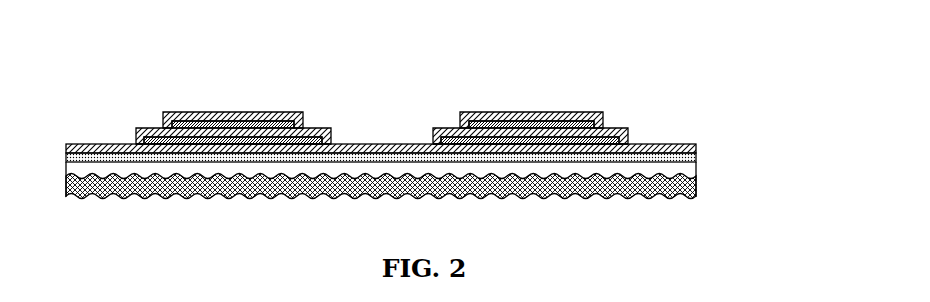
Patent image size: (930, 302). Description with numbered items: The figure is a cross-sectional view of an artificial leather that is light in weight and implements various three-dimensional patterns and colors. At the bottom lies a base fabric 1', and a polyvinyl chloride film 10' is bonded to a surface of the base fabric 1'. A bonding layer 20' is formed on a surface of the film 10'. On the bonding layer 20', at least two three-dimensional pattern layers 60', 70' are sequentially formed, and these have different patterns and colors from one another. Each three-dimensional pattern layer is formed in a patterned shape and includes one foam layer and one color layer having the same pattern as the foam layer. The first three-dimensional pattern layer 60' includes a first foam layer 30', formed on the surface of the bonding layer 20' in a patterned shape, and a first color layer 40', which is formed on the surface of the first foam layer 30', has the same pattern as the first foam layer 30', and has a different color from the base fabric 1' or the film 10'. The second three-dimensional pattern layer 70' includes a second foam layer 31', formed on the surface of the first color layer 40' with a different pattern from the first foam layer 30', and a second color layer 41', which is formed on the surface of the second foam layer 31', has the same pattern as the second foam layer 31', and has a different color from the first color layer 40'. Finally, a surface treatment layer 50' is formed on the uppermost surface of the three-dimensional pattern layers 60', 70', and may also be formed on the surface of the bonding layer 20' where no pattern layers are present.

The base fabric 1' is at (417, 199).
The polyvinyl chloride film 10' is at (424, 175).
The bonding layer 20' is at (424, 138).
The first foam layer 30' is at (418, 122).
The second foam layer 31' is at (381, 97).
The first color layer 40' is at (399, 106).
The second color layer 41' is at (383, 89).
The surface treatment layer 50' is at (383, 89).
The first three-dimensional pattern layer 60' is at (686, 69).
The second three-dimensional pattern layer 70' is at (545, 32).